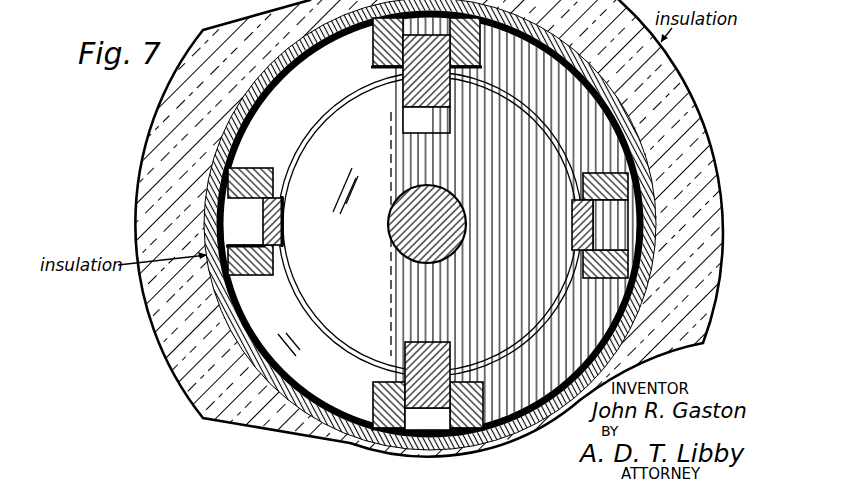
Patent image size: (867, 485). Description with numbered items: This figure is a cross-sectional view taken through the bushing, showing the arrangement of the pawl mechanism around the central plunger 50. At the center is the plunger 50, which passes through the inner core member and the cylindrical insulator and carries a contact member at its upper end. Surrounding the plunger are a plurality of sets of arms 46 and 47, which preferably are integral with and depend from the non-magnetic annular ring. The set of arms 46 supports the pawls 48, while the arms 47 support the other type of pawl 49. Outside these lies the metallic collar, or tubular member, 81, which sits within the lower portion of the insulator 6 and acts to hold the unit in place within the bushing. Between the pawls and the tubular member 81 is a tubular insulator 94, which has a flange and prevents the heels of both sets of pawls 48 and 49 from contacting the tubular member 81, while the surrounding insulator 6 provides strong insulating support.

The insulator 6 is at (143, 156).
The arms 46 is at (373, 52).
The arms 47 is at (270, 183).
The pawls 48 is at (413, 90).
The pawl 49 is at (284, 221).
The plunger 50 is at (389, 225).
The metallic collar 81 is at (229, 164).
The tubular insulator 94 is at (252, 112).